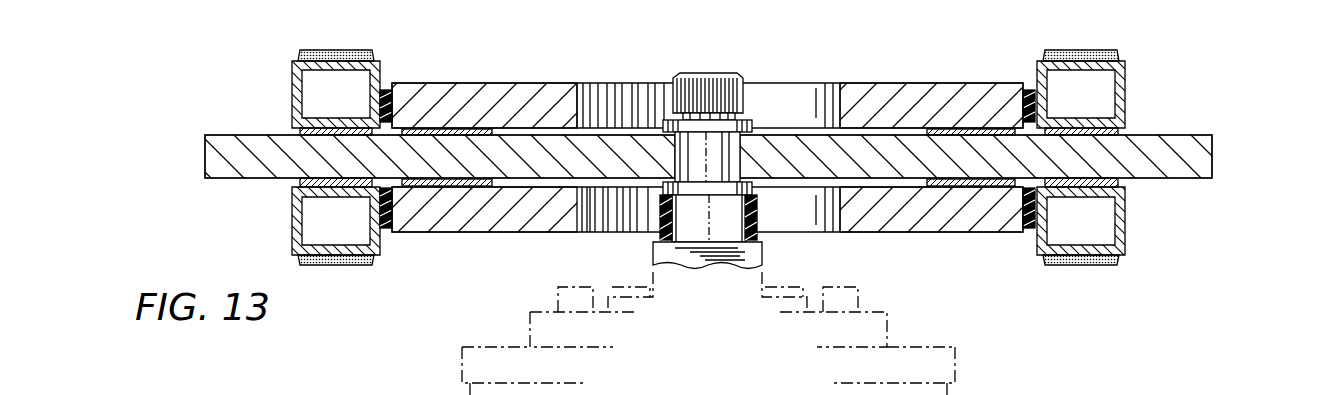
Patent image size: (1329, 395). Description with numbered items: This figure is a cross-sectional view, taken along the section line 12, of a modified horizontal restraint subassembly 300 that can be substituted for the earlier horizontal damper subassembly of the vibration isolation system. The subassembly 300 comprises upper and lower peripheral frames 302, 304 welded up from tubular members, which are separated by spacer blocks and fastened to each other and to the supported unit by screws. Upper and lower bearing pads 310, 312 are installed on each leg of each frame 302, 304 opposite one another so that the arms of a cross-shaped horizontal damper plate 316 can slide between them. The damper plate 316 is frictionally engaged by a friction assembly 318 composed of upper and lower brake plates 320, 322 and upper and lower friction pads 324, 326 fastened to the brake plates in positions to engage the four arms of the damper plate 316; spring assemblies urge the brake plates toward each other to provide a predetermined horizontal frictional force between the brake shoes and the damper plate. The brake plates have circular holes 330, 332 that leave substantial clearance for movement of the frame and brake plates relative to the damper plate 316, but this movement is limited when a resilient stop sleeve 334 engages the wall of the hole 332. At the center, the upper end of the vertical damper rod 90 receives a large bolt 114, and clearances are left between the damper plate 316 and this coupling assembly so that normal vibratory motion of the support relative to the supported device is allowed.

The section line 12 is at (175, 36).
The vertical damper rod 90 is at (757, 252).
The bolt 114 is at (672, 37).
The horizontal restraint subassembly 300 is at (868, 73).
The upper peripheral frame 302 is at (1125, 80).
The lower peripheral frame 304 is at (1125, 243).
The upper bearing pad 310 is at (302, 131).
The lower bearing pad 312 is at (300, 182).
The horizontal damper plate 316 is at (613, 147).
The friction assembly 318 is at (541, 84).
The upper brake plate 320 is at (562, 93).
The lower brake plate 322 is at (934, 215).
The upper friction pad 324 is at (441, 128).
The lower friction pad 326 is at (445, 187).
The circular hole 330 is at (831, 100).
The circular hole 332 is at (828, 220).
The resilient stop sleeve 334 is at (662, 212).